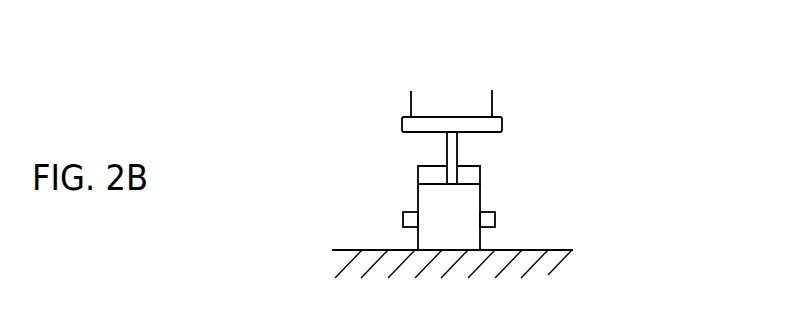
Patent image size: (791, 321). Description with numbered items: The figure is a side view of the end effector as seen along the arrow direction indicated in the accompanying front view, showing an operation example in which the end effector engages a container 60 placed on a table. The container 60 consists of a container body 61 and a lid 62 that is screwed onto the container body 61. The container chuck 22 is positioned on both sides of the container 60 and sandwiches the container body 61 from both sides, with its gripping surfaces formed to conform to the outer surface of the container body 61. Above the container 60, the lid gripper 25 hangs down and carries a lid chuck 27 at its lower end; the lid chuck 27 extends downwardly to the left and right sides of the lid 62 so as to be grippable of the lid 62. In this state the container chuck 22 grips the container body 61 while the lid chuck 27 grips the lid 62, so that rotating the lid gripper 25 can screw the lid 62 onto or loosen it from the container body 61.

The container chuck 22 is at (483, 213).
The lid gripper 25 is at (493, 102).
The lid chuck 27 is at (452, 149).
The container 60 is at (563, 196).
The container body 61 is at (468, 232).
The lid 62 is at (470, 174).